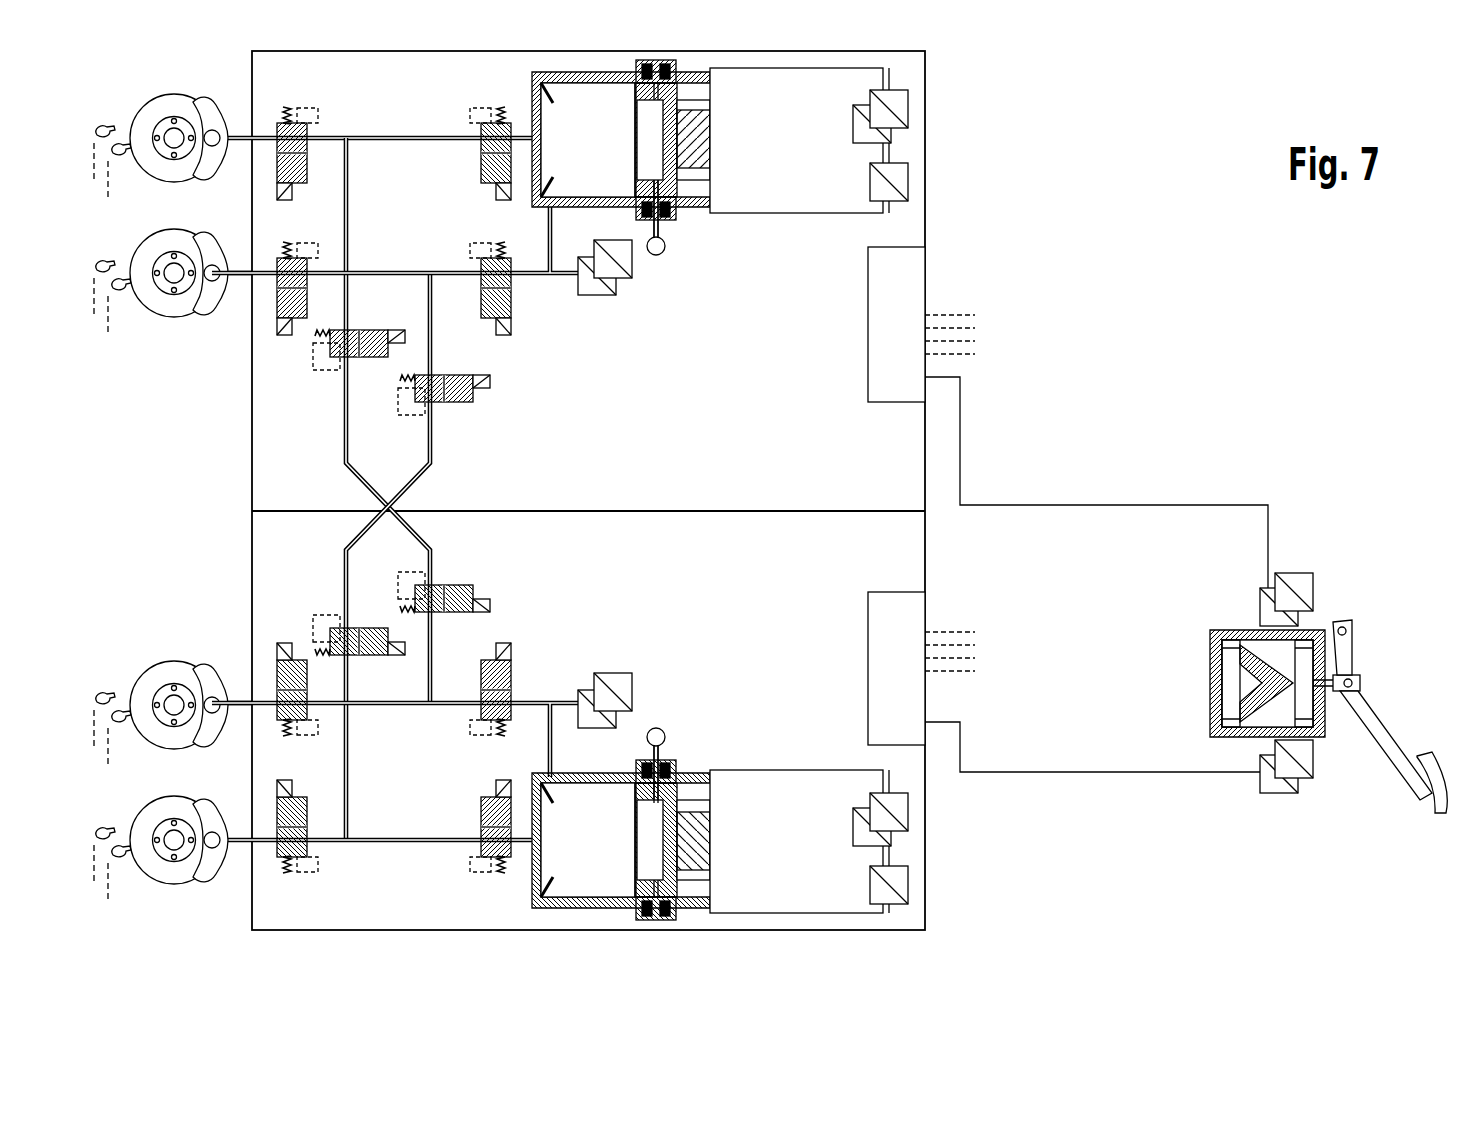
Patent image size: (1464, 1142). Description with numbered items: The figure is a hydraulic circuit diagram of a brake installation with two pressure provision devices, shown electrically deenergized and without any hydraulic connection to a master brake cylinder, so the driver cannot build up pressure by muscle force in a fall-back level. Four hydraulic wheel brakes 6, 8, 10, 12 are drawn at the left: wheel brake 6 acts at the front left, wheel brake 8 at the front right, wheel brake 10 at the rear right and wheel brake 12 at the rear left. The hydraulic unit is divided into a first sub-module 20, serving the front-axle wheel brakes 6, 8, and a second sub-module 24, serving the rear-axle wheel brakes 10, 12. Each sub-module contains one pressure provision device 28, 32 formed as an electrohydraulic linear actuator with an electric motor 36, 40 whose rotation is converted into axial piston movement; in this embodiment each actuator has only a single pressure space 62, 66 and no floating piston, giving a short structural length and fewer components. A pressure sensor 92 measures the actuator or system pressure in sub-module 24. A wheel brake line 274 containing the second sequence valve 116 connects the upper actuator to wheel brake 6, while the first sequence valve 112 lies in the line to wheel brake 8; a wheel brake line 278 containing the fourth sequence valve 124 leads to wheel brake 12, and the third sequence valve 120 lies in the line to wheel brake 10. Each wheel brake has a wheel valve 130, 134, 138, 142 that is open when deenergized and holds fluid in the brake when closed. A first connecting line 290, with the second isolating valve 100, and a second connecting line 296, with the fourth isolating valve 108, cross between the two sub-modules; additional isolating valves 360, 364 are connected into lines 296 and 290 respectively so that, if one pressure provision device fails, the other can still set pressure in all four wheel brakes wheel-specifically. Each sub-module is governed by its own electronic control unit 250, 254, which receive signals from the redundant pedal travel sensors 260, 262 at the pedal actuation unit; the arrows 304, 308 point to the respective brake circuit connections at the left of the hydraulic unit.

The wheel brake 6 is at (156, 86).
The wheel brake 8 is at (174, 334).
The wheel brake 10 is at (150, 654).
The wheel brake 12 is at (228, 874).
The first sub-module 20 is at (270, 480).
The second sub-module 24 is at (270, 534).
The pressure provision device 28 is at (691, 184).
The pressure provision device 32 is at (735, 766).
The electric motor 36 is at (818, 203).
The electric motor 40 is at (820, 798).
The pressure space 62 is at (541, 118).
The pressure space 66 is at (541, 865).
The pressure sensor 92 is at (610, 673).
The second isolating valve 100 is at (455, 402).
The fourth isolating valve 108 is at (455, 583).
The first sequence valve 112 is at (510, 320).
The second sequence valve 116 is at (482, 160).
The third sequence valve 120 is at (511, 700).
The fourth sequence valve 124 is at (482, 835).
The wheel valve 130 is at (307, 160).
The wheel valve 134 is at (290, 334).
The wheel valve 138 is at (292, 660).
The wheel valve 142 is at (307, 825).
The electronic open-loop and closed-loop control unit 250 is at (915, 277).
The electronic open-loop and closed-loop control unit 254 is at (910, 748).
The pedal travel sensor 260 is at (1296, 572).
The pedal travel sensor 262 is at (1313, 758).
The hydraulic wheel brake line 274 is at (383, 136).
The hydraulic wheel brake line 278 is at (372, 843).
The first hydraulic connecting line 290 is at (428, 340).
The second hydraulic connecting line 296 is at (345, 405).
The brake line branch 304 is at (241, 318).
The brake line branch 308 is at (243, 656).
The isolating valve 360 is at (370, 357).
The isolating valve 364 is at (368, 627).